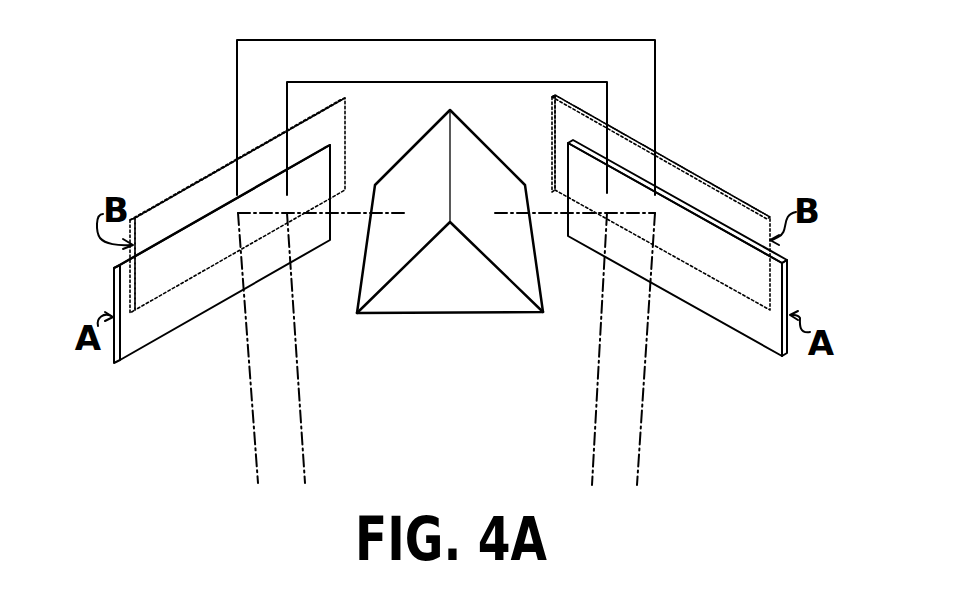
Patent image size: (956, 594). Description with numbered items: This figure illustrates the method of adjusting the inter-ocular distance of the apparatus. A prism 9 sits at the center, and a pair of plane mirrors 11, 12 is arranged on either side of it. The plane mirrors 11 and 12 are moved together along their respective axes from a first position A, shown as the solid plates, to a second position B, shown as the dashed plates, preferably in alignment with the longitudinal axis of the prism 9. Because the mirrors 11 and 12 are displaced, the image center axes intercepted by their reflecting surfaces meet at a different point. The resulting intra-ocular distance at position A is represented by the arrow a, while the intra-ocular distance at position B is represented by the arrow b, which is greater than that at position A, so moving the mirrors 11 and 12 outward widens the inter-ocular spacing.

The prism 9 is at (523, 255).
The plane mirror 11 is at (192, 230).
The plane mirror 12 is at (703, 225).
The arrow representing intra-ocular distance at position A a is at (447, 117).
The arrow representing intra-ocular distance at position B b is at (446, 97).